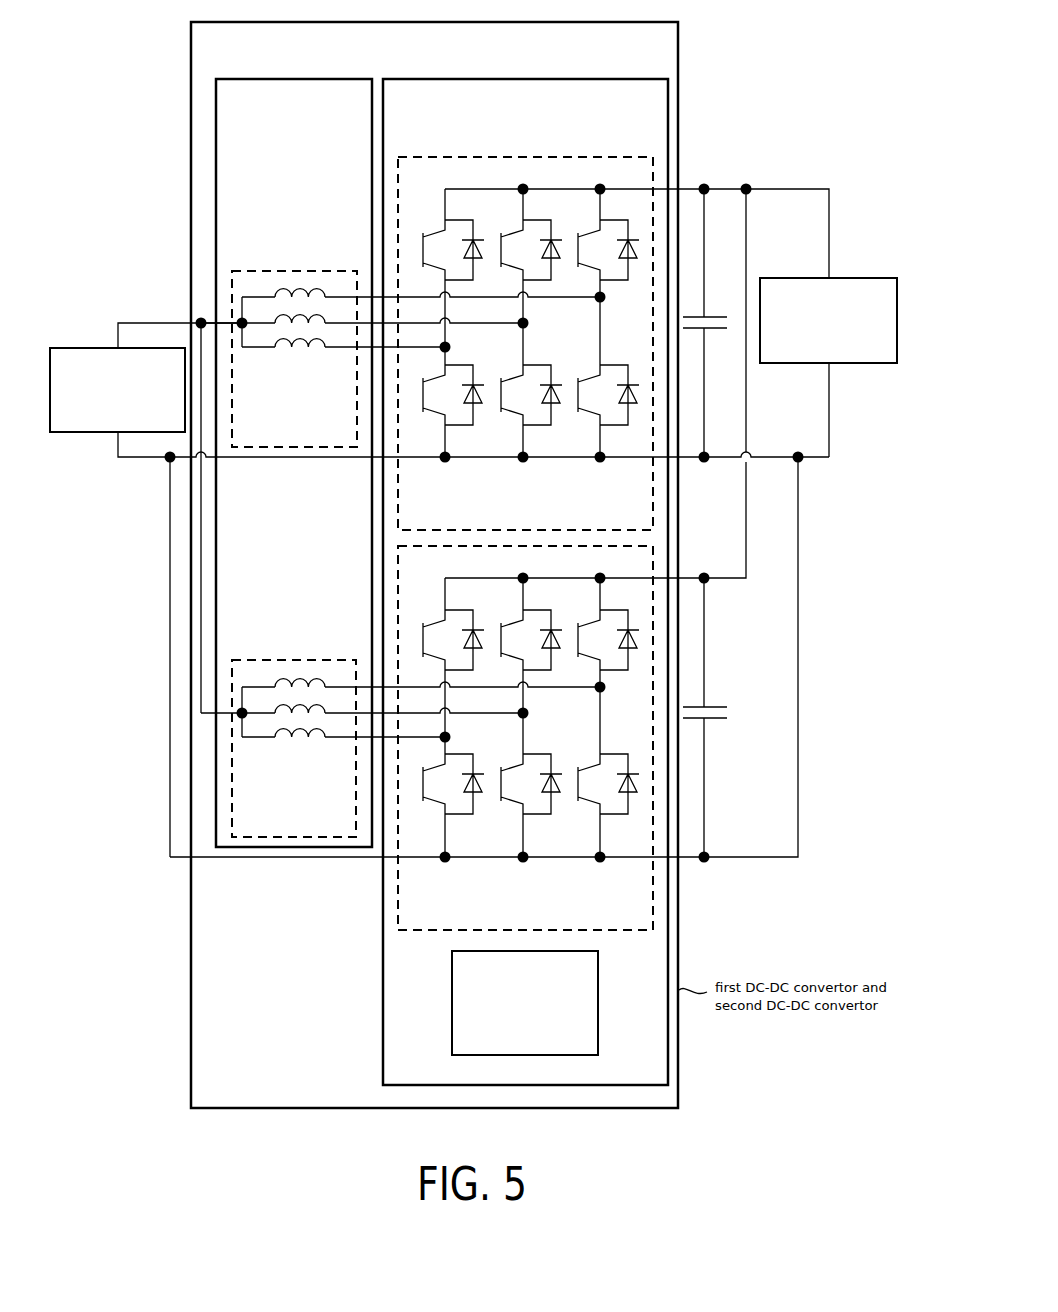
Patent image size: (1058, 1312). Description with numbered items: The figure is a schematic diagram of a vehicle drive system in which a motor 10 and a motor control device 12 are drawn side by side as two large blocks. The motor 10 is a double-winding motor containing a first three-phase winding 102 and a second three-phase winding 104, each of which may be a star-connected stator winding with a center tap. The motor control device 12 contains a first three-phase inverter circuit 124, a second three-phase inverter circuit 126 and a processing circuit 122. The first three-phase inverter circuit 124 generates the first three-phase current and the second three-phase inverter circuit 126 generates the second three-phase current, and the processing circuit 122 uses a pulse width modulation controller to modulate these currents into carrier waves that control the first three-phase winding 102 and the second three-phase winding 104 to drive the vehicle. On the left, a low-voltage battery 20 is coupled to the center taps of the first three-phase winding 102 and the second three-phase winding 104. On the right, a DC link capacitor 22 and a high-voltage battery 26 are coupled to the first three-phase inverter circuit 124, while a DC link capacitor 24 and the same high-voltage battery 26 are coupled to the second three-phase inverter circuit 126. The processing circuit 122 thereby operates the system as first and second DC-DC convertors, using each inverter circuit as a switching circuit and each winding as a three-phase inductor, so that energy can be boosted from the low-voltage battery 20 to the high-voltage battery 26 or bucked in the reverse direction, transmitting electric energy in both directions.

The motor 10 is at (298, 78).
The motor control device 12 is at (528, 78).
The low-voltage battery 20 is at (100, 347).
The DC link capacitor 22 is at (715, 316).
The DC link capacitor 24 is at (715, 706).
The high-voltage battery 26 is at (848, 277).
The first three-phase winding 102 is at (290, 270).
The second three-phase winding 104 is at (290, 659).
The processing circuit 122 is at (599, 1000).
The first three-phase inverter circuit 124 is at (402, 156).
The second three-phase inverter circuit 126 is at (400, 931).